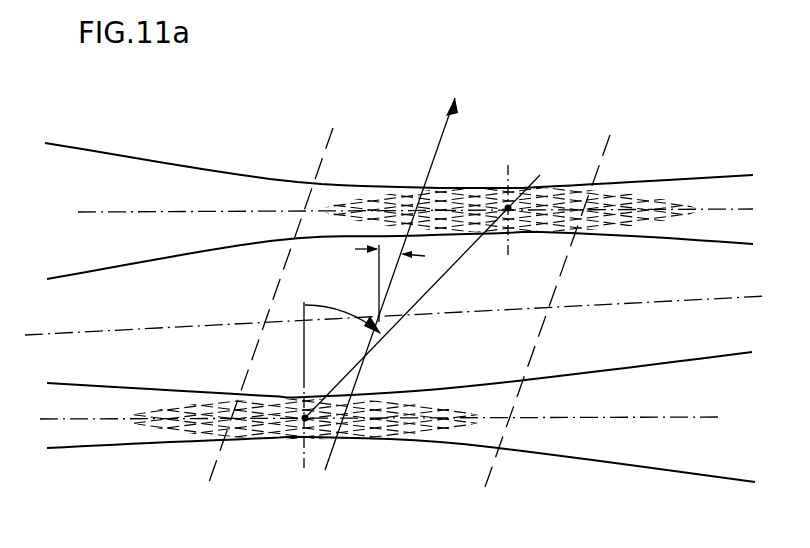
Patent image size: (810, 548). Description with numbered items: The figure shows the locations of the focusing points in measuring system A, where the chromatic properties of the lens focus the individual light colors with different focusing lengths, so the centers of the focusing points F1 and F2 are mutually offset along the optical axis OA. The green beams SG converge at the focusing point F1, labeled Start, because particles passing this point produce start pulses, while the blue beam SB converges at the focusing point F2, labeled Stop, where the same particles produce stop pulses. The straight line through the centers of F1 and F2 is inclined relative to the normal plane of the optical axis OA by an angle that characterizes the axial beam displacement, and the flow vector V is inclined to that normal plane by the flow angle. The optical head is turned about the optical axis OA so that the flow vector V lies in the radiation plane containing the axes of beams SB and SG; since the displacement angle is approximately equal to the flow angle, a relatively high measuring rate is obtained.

The blue beam SB is at (215, 182).
The green beams SG is at (172, 398).
The stop pulse beam axis Stop is at (393, 197).
The start pulse beam axis Start is at (370, 406).
The optical axis OA is at (162, 325).
The focusing point F1 is at (305, 418).
The focusing point F2 is at (508, 208).
The flow vector V is at (450, 130).